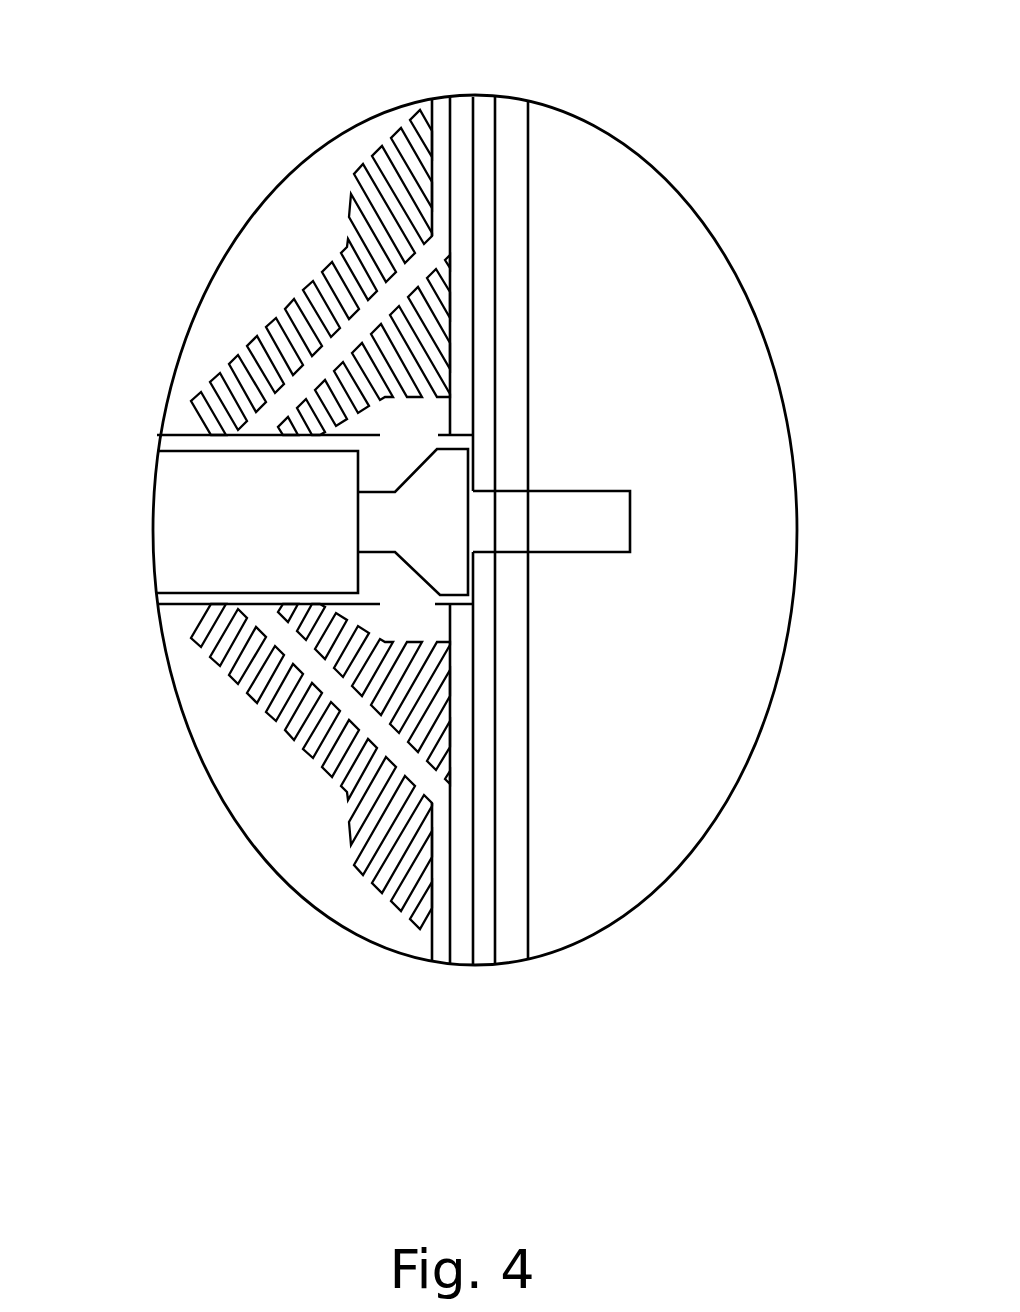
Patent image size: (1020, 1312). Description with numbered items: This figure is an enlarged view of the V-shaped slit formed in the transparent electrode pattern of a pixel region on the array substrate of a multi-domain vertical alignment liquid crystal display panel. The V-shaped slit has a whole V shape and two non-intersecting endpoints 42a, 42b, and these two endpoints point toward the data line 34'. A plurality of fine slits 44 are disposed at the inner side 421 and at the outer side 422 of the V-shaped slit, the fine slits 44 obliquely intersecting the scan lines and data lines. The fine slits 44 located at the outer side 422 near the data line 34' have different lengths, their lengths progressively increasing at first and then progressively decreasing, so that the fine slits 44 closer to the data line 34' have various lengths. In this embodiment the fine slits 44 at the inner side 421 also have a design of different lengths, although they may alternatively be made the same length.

The data line 34' is at (508, 486).
The non-intersecting endpoint 42a is at (435, 248).
The non-intersecting endpoint 42b is at (435, 791).
The fine slits 44 is at (454, 289).
The inner side 421 is at (531, 719).
The outer side 422 is at (370, 90).